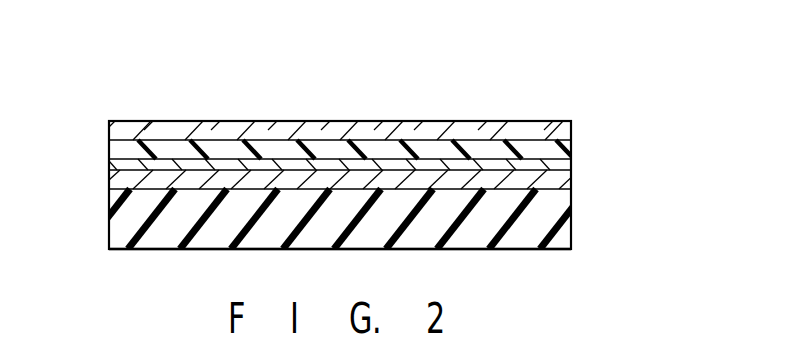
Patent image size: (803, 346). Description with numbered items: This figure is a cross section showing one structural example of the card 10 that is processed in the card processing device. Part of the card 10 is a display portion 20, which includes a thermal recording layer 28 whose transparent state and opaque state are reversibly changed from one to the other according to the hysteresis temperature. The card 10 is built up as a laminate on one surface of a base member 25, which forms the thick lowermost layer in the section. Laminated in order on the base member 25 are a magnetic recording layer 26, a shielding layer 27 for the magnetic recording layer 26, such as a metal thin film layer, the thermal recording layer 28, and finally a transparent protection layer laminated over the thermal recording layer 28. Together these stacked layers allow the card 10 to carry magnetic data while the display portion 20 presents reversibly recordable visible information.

The card 10 is at (608, 83).
The display portion 20 is at (373, 121).
The base member 25 is at (109, 237).
The magnetic recording layer 26 is at (571, 173).
The shielding layer 27 is at (109, 165).
The thermal recording layer 28 is at (109, 153).